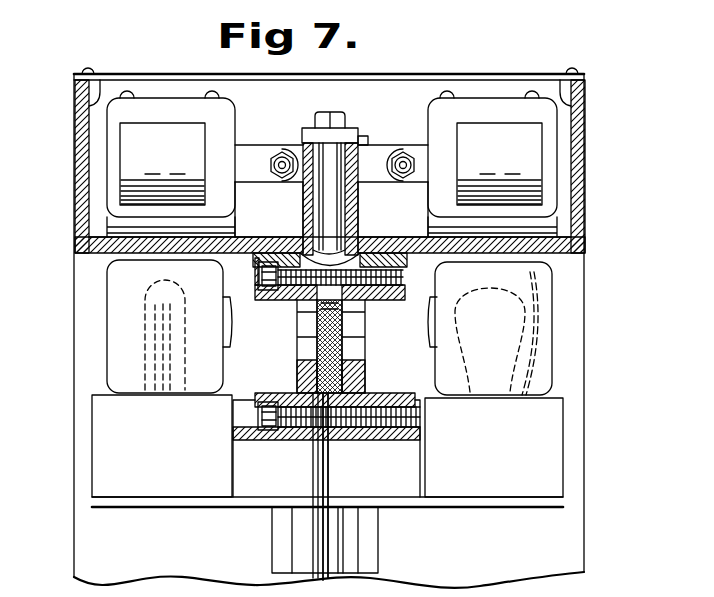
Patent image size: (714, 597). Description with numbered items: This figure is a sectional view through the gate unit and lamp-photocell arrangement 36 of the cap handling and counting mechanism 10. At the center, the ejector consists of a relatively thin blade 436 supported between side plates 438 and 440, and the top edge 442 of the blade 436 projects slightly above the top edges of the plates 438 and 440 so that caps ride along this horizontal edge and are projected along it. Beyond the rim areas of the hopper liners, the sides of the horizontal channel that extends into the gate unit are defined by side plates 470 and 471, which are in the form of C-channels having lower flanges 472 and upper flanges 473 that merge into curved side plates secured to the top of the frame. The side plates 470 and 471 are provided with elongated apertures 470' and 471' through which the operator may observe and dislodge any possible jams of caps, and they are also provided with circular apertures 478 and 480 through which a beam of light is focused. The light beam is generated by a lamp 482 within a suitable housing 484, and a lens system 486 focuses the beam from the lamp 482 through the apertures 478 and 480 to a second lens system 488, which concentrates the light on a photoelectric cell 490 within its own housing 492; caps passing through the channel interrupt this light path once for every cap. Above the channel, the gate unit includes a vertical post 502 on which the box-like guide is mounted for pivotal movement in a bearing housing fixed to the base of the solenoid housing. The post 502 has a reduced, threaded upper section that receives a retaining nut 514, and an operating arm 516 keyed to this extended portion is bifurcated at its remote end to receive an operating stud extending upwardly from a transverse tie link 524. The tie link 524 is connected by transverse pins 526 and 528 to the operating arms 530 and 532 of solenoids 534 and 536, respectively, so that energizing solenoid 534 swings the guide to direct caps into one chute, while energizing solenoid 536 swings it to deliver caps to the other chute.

The handling mechanism 10 is at (584, 424).
The lamp-photocell arrangement 36 is at (555, 376).
The ejector blade 436 is at (329, 478).
The side plate 438 is at (315, 476).
The side plate 440 is at (338, 492).
The top edge 442 is at (328, 378).
The side plate 470 is at (281, 371).
The elongated aperture 470' is at (280, 346).
The side plate 471 is at (374, 371).
The elongated aperture 471' is at (374, 346).
The lower flanges 472 is at (256, 441).
The upper flanges 473 is at (258, 264).
The circular aperture 478 is at (298, 314).
The circular aperture 480 is at (364, 313).
The lamp 482 is at (522, 305).
The housing 484 is at (552, 340).
The lens system 486 is at (481, 340).
The second lens system 488 is at (234, 350).
The photoelectric cell 490 is at (145, 300).
The housing 492 is at (108, 327).
The vertical post 502 is at (340, 210).
The retaining nut 514 is at (316, 119).
The operating arm 516 is at (353, 127).
The transverse tie link 524 is at (374, 148).
The transverse pin 526 is at (264, 180).
The transverse pin 528 is at (417, 167).
The operating arm 530 is at (254, 186).
The operating arm 532 is at (417, 200).
The solenoid 534 is at (130, 142).
The solenoid 536 is at (534, 162).